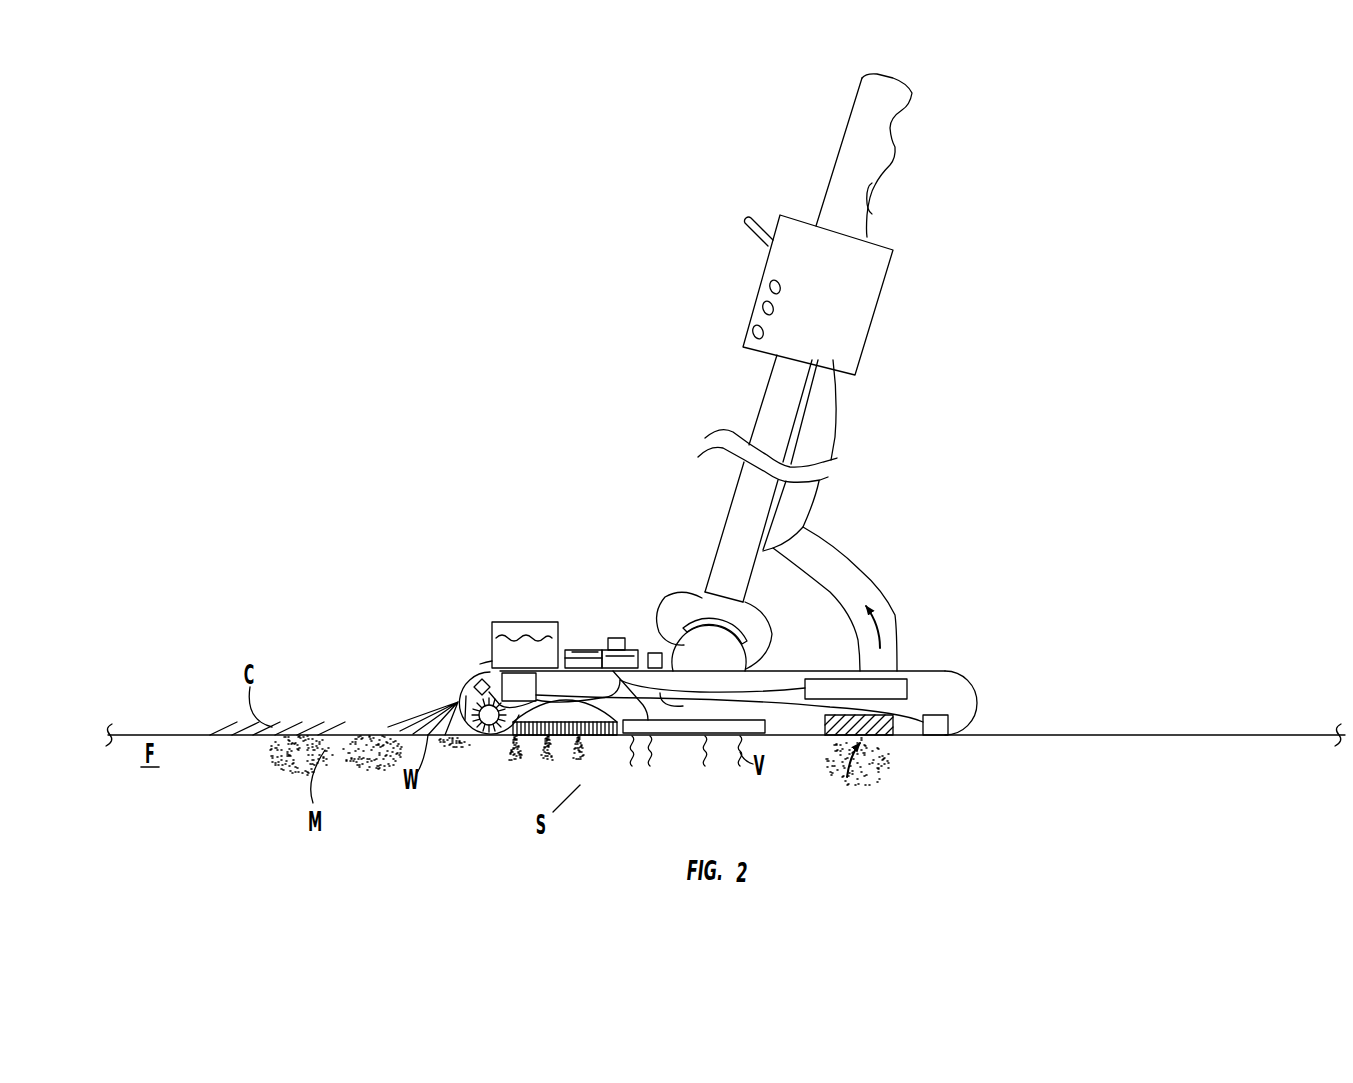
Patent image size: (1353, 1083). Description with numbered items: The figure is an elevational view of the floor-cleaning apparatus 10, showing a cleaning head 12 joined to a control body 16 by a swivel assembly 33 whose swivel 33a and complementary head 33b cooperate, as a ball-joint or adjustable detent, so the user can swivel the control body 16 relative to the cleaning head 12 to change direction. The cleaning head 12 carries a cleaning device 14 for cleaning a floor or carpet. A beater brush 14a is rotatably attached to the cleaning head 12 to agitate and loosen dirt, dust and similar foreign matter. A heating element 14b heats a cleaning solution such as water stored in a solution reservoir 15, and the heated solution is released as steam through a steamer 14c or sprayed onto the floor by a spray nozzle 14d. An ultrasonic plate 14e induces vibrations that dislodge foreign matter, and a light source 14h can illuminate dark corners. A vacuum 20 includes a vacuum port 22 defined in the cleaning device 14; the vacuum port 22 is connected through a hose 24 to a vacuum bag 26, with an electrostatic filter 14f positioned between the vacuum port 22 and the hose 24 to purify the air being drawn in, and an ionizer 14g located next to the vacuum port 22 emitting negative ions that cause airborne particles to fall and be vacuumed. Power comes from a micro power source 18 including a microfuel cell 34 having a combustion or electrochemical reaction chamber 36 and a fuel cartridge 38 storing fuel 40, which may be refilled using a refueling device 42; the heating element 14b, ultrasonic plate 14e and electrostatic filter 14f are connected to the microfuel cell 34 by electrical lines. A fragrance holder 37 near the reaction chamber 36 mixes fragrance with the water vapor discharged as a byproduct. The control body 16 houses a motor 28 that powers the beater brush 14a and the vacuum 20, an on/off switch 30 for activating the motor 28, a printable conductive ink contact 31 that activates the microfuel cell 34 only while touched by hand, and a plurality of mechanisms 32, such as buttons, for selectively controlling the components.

The floor-cleaning apparatus 10 is at (957, 307).
The cleaning head 12 is at (553, 688).
The cleaning device 14 is at (783, 728).
The beater brush 14a is at (457, 750).
The heating element 14b is at (519, 688).
The steamer 14c is at (505, 765).
The spray nozzle 14d is at (467, 690).
The ultrasonic plate 14e is at (675, 737).
The electrostatic filter 14f is at (890, 685).
The ionizer 14g is at (940, 727).
The light source 14h is at (477, 680).
The solution reservoir 15 is at (490, 661).
The control body 16 is at (723, 532).
The micro power source 18 is at (585, 647).
The vacuum 20 is at (888, 572).
The vacuum port 22 is at (873, 737).
The hose 24 is at (829, 597).
The vacuum bag 26 is at (802, 490).
The motor 28 is at (821, 344).
The on/off switch 30 is at (752, 232).
The printable conductive ink contact 31 is at (868, 196).
The mechanisms 32 is at (760, 306).
The swivel assembly 33 is at (755, 596).
The swivel 33a is at (757, 622).
The complementary head 33b is at (708, 640).
The microfuel cell 34 is at (598, 652).
The reaction chamber 36 is at (612, 652).
The fragrance holder 37 is at (612, 660).
The fuel cartridge 38 is at (575, 650).
The fuel 40 is at (585, 673).
The refueling device 42 is at (655, 653).